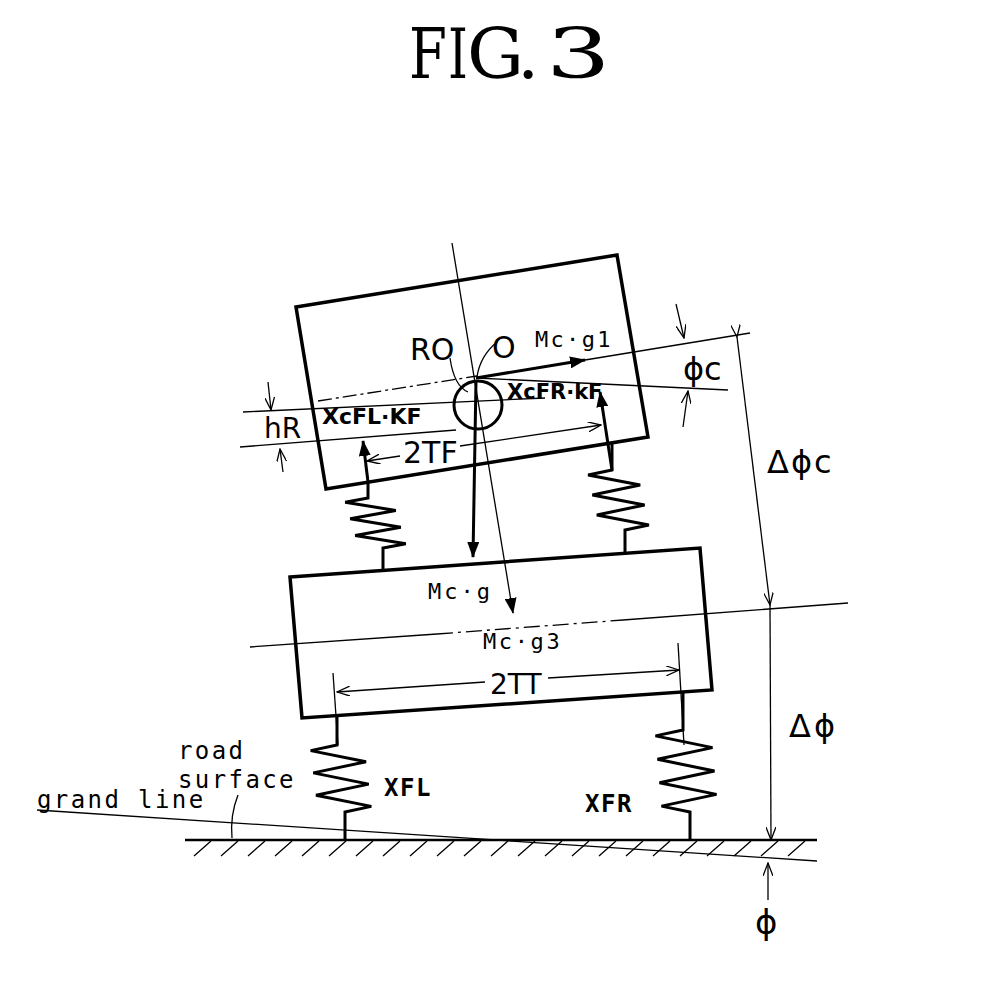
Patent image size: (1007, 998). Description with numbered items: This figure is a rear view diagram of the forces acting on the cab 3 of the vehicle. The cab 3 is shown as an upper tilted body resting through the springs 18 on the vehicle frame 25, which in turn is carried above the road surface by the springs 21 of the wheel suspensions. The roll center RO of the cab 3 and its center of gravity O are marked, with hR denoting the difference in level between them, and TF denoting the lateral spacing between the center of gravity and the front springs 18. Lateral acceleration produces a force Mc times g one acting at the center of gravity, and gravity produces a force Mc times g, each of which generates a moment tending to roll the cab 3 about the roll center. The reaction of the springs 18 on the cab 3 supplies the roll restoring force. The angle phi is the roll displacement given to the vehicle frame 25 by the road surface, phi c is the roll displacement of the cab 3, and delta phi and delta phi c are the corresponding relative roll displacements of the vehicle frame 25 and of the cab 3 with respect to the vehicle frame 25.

The cab 3 is at (349, 299).
The springs 18 is at (352, 530).
The vehicle frame 25 is at (290, 607).
The spring 21 is at (333, 748).